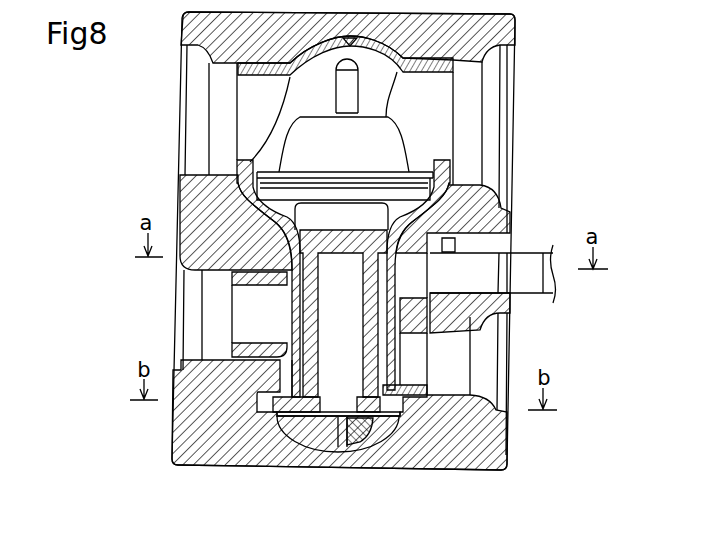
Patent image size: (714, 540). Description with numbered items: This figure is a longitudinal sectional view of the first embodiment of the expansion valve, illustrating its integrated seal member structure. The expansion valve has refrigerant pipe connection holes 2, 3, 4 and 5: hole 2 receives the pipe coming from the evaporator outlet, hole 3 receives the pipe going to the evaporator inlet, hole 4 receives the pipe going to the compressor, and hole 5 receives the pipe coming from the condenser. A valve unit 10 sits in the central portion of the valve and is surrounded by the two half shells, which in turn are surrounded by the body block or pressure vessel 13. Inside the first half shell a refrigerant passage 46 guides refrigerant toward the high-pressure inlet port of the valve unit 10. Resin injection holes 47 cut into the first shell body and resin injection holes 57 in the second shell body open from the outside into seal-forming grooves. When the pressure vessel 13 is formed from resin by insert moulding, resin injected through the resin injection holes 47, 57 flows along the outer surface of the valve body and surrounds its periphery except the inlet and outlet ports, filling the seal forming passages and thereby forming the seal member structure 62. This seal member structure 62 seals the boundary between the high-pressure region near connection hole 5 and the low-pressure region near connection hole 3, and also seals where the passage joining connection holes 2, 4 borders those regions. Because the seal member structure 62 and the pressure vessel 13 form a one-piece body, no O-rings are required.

The refrigerant pipe connection hole 2 is at (180, 140).
The refrigerant pipe connection hole 3 is at (175, 357).
The refrigerant pipe connection hole 4 is at (515, 103).
The refrigerant pipe connection hole 5 is at (508, 348).
The valve unit 10 is at (383, 148).
The pressure vessel 13 is at (492, 448).
The refrigerant passage 46 is at (393, 299).
The resin injection holes 47 is at (393, 410).
The resin injection holes 57 is at (287, 402).
The seal member structure 62 is at (299, 332).